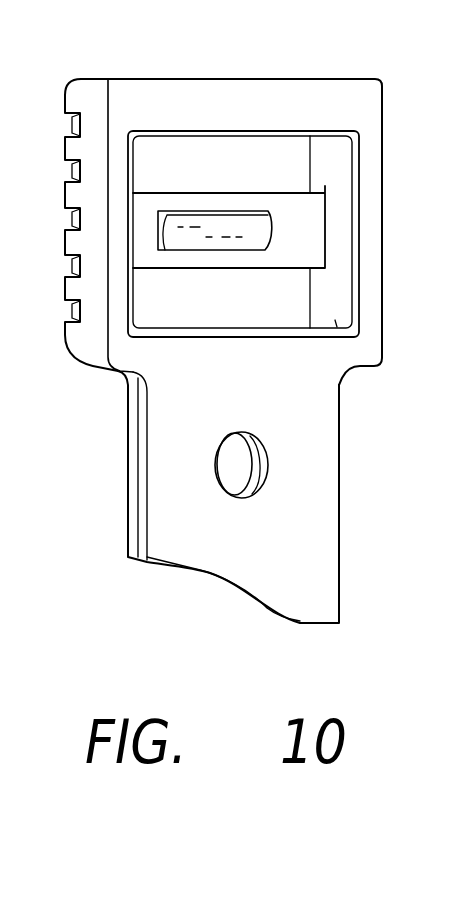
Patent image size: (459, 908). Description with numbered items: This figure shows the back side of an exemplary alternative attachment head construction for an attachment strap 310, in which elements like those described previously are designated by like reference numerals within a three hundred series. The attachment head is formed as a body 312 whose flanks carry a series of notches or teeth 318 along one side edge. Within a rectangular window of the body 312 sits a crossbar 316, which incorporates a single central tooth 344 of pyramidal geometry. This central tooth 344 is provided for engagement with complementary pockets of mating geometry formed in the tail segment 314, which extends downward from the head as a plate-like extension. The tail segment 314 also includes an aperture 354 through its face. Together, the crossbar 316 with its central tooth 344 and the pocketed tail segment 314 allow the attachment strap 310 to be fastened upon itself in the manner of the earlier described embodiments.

The attachment strap 310 is at (238, 311).
The body 312 is at (190, 77).
The tail segment 314 is at (342, 537).
The crossbar 316 is at (170, 268).
The retention teeth 318 is at (85, 155).
The central tooth 344 is at (237, 233).
The aperture 354 is at (258, 462).